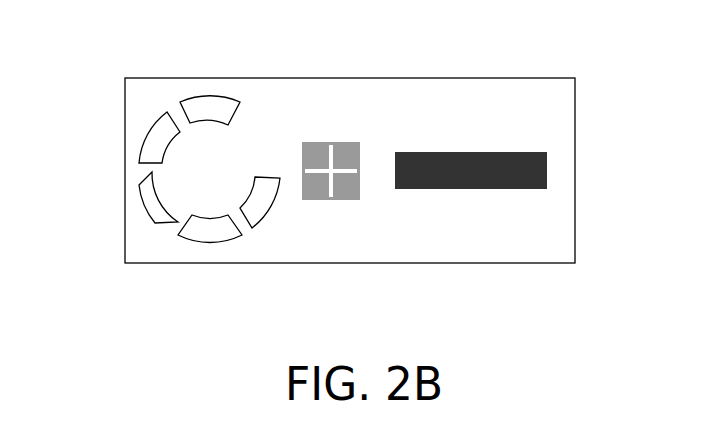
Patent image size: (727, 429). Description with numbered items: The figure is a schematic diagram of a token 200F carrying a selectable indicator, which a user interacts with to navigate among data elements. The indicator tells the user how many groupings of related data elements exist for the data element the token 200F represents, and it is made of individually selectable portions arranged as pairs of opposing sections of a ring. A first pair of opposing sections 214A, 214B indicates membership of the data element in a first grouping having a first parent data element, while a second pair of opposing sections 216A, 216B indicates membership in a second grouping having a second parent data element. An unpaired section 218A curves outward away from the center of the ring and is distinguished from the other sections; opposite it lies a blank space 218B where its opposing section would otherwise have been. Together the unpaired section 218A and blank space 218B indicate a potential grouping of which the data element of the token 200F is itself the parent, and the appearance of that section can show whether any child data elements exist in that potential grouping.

The token 200F is at (517, 78).
The first opposing section 214A is at (216, 96).
The first opposing section 214B is at (220, 246).
The second opposing section 216A is at (143, 138).
The second opposing section 216B is at (273, 210).
The unpaired section 218A is at (143, 187).
The blank space 218B is at (262, 140).